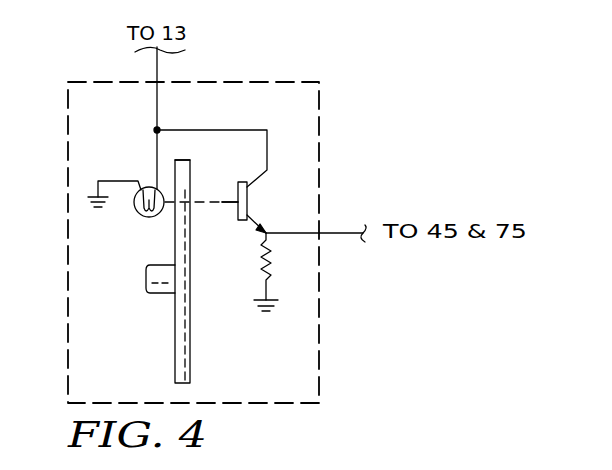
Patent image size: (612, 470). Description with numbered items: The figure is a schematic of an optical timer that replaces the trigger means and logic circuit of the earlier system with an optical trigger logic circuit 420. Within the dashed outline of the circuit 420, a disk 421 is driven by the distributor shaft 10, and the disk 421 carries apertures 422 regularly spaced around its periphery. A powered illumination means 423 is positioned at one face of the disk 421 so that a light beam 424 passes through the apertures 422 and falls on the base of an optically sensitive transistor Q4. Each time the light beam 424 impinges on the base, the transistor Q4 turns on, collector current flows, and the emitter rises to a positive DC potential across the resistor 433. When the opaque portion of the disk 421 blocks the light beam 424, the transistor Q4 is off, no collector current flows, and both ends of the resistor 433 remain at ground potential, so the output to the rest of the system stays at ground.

The distributor shaft 10 is at (146, 271).
The optical trigger logic circuit 420 is at (321, 337).
The disk 421 is at (175, 313).
The apertures 422 is at (179, 216).
The powered illumination means 423 is at (146, 218).
The light beam 424 is at (230, 202).
The resistor 433 is at (263, 262).
The optically sensitive transistor Q4 is at (258, 207).